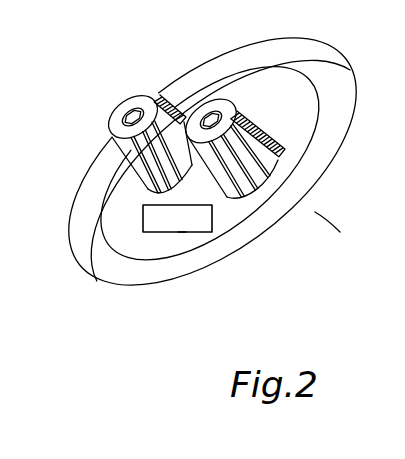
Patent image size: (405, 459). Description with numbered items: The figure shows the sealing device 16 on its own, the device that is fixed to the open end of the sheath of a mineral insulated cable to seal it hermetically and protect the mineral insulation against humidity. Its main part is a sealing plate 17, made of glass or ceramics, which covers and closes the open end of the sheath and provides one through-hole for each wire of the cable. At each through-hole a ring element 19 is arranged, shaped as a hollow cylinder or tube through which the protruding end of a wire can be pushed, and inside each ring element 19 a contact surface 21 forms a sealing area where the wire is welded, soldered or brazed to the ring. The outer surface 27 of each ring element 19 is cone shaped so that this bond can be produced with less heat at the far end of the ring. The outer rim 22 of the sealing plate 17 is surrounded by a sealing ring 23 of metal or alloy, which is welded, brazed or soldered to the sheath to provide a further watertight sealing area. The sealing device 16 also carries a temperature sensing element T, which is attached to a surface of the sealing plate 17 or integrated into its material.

The sealing device 16 is at (174, 321).
The sealing plate 17 is at (130, 208).
The ring element 19 is at (175, 110).
The contact surface 21 is at (133, 116).
The outer rim 22 is at (160, 260).
The sealing ring 23 is at (342, 162).
The outer surface 27 is at (260, 172).
The temperature sensing element T is at (182, 234).